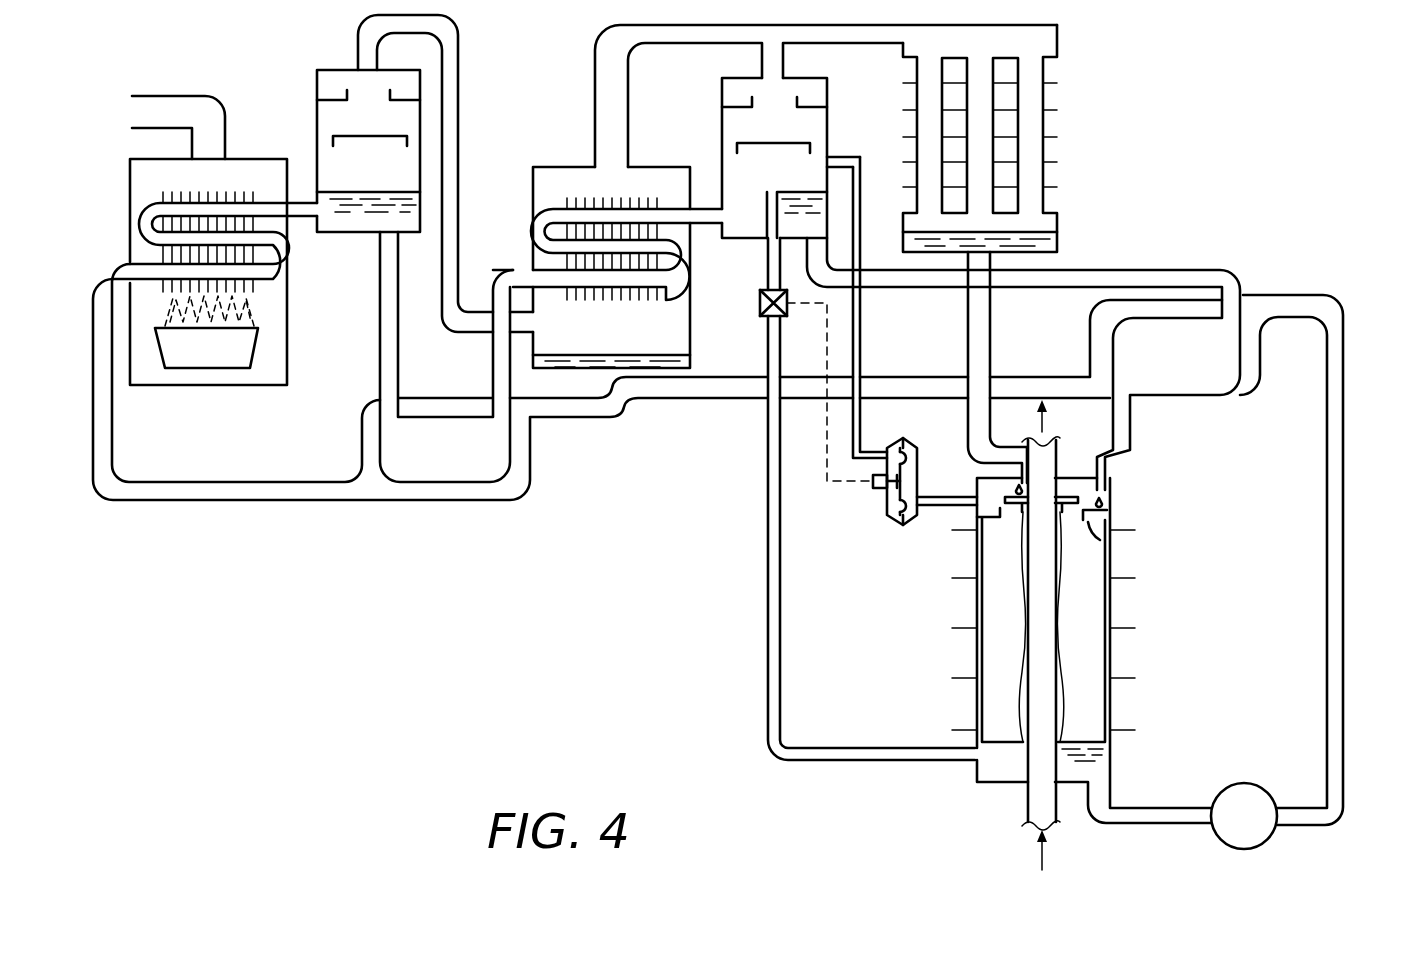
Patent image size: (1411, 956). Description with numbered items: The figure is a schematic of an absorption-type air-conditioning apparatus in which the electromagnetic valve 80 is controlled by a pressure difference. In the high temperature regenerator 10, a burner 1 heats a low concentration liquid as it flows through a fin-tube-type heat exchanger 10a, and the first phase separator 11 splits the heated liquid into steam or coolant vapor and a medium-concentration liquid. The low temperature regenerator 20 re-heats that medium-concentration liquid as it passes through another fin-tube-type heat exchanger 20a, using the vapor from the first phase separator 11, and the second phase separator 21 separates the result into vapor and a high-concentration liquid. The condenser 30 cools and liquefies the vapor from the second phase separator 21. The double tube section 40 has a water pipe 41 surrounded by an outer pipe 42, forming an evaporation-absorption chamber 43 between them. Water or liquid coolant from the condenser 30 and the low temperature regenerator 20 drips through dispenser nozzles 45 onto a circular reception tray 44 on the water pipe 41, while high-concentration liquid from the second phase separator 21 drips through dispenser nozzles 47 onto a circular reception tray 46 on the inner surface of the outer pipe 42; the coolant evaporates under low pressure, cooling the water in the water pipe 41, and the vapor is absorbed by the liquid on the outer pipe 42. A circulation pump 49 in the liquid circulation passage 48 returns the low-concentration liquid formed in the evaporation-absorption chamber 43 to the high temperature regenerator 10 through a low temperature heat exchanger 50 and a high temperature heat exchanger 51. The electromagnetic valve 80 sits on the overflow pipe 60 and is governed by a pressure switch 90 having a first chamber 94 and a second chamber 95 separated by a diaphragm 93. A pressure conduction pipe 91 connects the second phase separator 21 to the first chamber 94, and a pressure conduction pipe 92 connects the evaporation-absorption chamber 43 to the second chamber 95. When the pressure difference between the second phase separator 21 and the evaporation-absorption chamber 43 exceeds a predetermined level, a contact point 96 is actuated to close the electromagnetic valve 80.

The burner 1 is at (257, 345).
The high temperature regenerator 10 is at (287, 290).
The fin-tube-type heat exchanger 10a is at (143, 213).
The first phase separator 11 is at (316, 104).
The low temperature regenerator 20 is at (555, 167).
The fin-tube-type heat exchanger 20a is at (545, 213).
The second phase separator 21 is at (722, 122).
The condenser 30 is at (1057, 40).
The double tube section 40 is at (1079, 653).
The water pipe 41 is at (1012, 802).
The outer pipe 42 is at (1110, 655).
The evaporation-absorption chamber 43 is at (1000, 704).
The circular reception tray 44 is at (1022, 515).
The dispenser nozzles 45 is at (1016, 475).
The circular reception tray 46 is at (1098, 538).
The dispenser nozzles 47 is at (1115, 493).
The liquid circulation passage 48 is at (1344, 655).
The circulation pump 49 is at (1282, 838).
The low temperature heat exchanger 50 is at (1210, 395).
The high temperature heat exchanger 51 is at (327, 500).
The overflow pipe 60 is at (768, 570).
The electromagnetic valve 80 is at (760, 303).
The pressure switch 90 is at (880, 509).
The pressure conduction pipe 91 is at (862, 320).
The pressure conduction pipe 92 is at (937, 507).
The diaphragm 93 is at (905, 525).
The first chamber 94 is at (898, 446).
The second chamber 95 is at (910, 455).
The contact point 96 is at (873, 483).